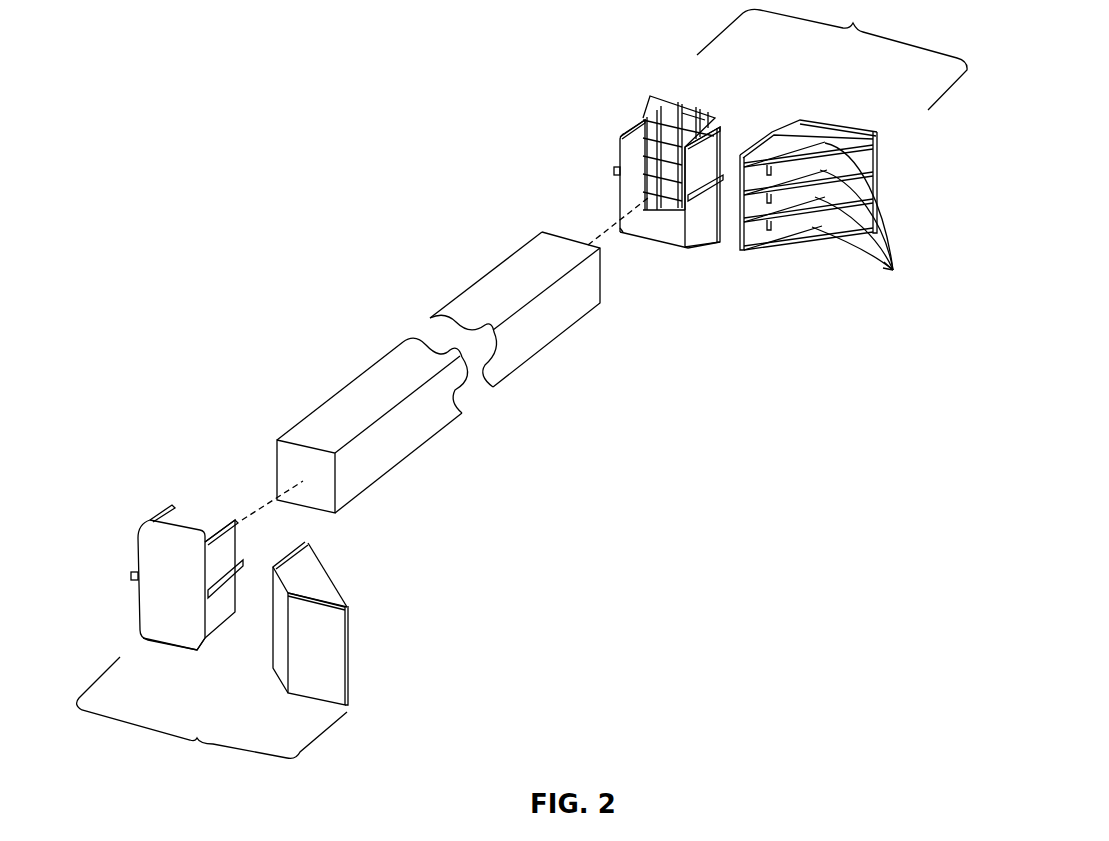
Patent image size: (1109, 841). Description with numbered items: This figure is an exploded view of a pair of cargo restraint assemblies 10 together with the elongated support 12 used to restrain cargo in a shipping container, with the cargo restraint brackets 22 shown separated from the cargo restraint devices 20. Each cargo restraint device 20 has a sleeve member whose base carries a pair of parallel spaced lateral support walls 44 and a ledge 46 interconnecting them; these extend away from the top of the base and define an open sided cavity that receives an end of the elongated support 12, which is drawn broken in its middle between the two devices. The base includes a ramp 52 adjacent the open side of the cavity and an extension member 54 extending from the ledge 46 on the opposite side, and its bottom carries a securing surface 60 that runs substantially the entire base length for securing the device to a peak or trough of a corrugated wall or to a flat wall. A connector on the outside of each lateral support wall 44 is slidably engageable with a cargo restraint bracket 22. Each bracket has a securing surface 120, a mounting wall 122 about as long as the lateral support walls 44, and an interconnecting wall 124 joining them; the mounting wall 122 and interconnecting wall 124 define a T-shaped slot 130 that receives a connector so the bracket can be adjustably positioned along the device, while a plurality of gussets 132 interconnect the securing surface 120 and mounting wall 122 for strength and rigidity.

The cargo restraint assembly 10 is at (522, 386).
The elongated support 12 is at (487, 275).
The cargo restraint device 20 is at (403, 327).
The cargo restraint bracket 22 is at (569, 387).
The lateral support walls 44 is at (632, 126).
The ledge 46 is at (652, 222).
The ramp 52 is at (673, 107).
The extension member 54 is at (145, 643).
The securing surface 60 is at (167, 585).
The securing surface 120 is at (333, 677).
The mounting wall 122 is at (873, 133).
The interconnecting wall 124 is at (773, 131).
The slot 130 is at (275, 615).
The gussets 132 is at (320, 588).